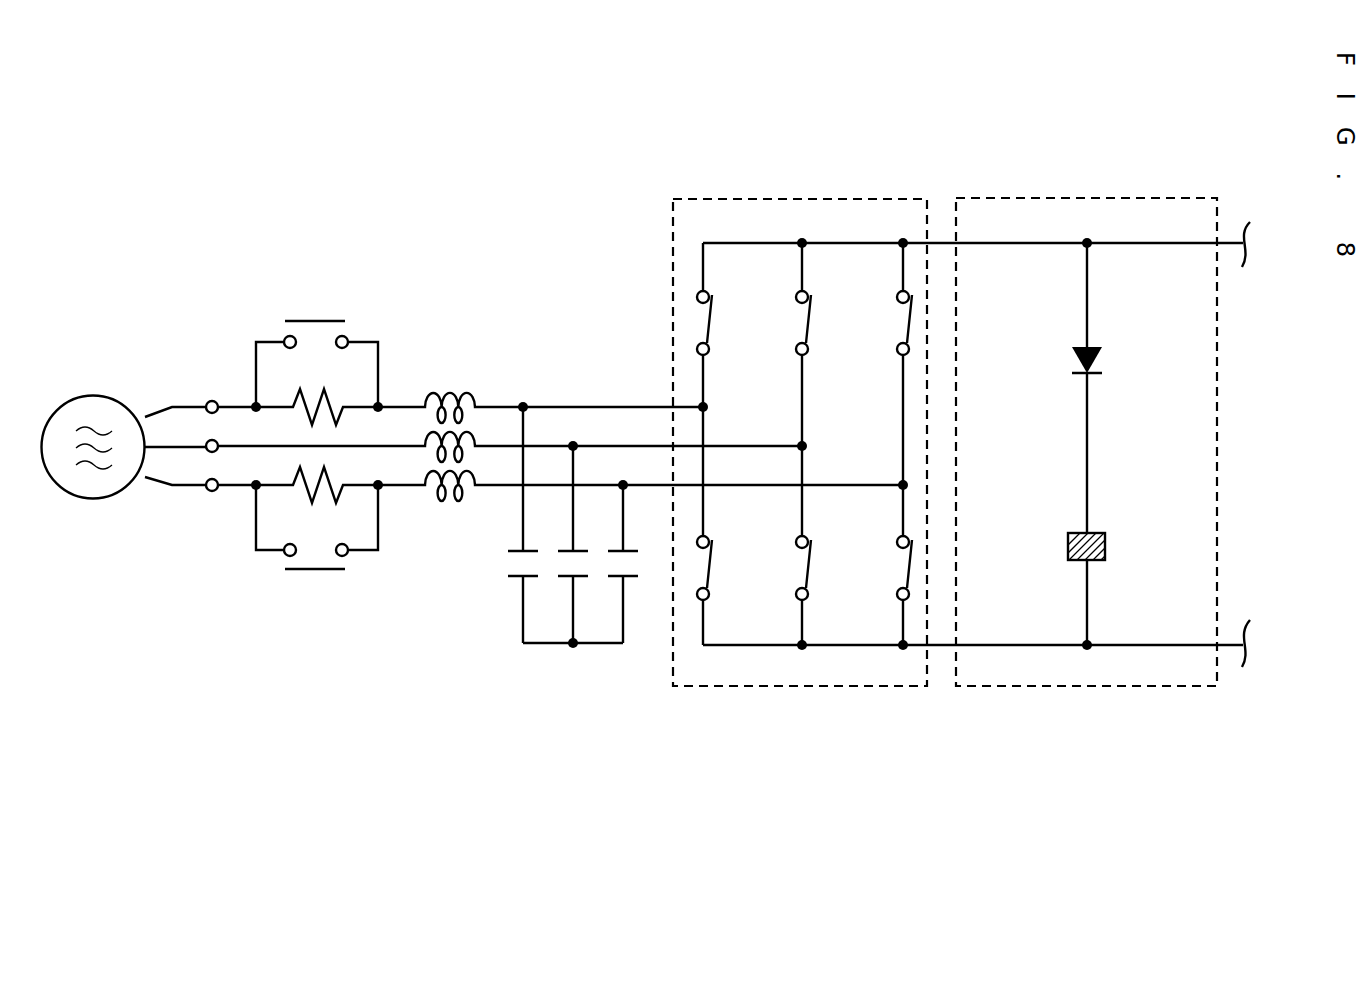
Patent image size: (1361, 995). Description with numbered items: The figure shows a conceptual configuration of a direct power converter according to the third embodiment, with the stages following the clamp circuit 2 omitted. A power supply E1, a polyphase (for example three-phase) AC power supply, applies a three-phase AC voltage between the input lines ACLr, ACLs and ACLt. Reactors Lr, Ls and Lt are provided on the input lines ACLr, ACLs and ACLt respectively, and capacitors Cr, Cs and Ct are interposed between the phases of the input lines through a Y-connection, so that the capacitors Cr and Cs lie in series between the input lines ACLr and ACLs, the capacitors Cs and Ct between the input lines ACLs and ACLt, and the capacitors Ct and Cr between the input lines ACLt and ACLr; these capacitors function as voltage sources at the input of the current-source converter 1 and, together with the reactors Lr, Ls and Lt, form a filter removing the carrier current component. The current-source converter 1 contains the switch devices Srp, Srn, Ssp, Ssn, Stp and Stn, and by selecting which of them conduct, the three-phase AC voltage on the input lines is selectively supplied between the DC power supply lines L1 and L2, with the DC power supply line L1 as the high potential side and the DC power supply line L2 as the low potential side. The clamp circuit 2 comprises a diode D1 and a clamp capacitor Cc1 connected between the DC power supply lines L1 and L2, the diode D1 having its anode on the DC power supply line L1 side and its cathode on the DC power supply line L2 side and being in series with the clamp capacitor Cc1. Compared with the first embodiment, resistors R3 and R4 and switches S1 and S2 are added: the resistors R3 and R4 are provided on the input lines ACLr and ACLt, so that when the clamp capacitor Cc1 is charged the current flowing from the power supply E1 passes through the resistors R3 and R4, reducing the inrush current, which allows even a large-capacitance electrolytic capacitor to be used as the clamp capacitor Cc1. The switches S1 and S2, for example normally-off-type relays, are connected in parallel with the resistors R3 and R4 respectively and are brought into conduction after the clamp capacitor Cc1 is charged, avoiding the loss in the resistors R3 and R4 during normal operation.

The power supply E1 is at (87, 397).
The resistor R3 is at (310, 388).
The resistor R4 is at (312, 507).
The switch S1 is at (310, 312).
The switch S2 is at (313, 573).
The reactor Lr is at (435, 390).
The reactor Ls is at (480, 430).
The reactor Lt is at (449, 501).
The input line ACLr is at (540, 405).
The input line ACLs is at (593, 443).
The input line ACLt is at (647, 482).
The capacitor Cr is at (513, 577).
The capacitor Cs is at (565, 577).
The capacitor Ct is at (616, 577).
The current-source converter 1 is at (885, 195).
The clamp circuit 2 is at (1118, 196).
The DC power supply line L1 is at (938, 240).
The DC power supply line L2 is at (938, 648).
The switch device Srp is at (713, 322).
The switch device Srn is at (713, 565).
The switch device Ssp is at (814, 322).
The switch device Ssn is at (813, 565).
The switch device Stp is at (893, 322).
The switch device Stn is at (897, 565).
The diode D1 is at (1102, 352).
The clamp capacitor Cc1 is at (1095, 533).